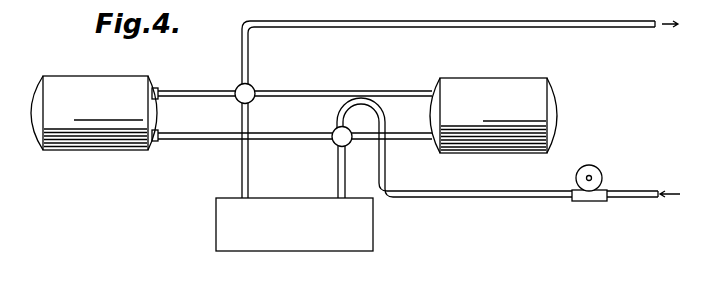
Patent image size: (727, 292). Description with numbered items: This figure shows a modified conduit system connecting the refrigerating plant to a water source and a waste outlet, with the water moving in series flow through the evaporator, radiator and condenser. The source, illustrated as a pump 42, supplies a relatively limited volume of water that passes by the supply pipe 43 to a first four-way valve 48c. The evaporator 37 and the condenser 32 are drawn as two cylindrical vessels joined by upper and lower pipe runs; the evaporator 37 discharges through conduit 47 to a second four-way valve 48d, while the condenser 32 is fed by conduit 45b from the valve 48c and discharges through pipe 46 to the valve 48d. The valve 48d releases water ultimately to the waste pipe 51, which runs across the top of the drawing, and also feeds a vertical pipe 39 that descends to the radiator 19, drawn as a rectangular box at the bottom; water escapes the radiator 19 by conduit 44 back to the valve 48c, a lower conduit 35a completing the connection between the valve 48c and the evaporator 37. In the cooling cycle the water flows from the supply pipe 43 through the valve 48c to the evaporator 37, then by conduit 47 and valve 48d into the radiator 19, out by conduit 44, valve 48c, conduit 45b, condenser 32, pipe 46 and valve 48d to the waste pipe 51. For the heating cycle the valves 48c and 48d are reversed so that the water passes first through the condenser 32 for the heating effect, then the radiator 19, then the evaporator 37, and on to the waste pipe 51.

The evaporator 37 is at (94, 77).
The condenser 32 is at (499, 78).
The conduit 47 is at (178, 90).
The pipe 46 is at (339, 88).
The pipe 35a is at (292, 140).
The conduit 45b is at (413, 140).
The waste pipe 51 is at (469, 16).
The pipe 39 is at (242, 163).
The conduit 44 is at (338, 174).
The supply pipe 43 is at (494, 197).
The second four-way valve 48d is at (252, 87).
The first four-way valve 48c is at (334, 131).
The pump 42 is at (596, 167).
The radiator 19 is at (233, 226).